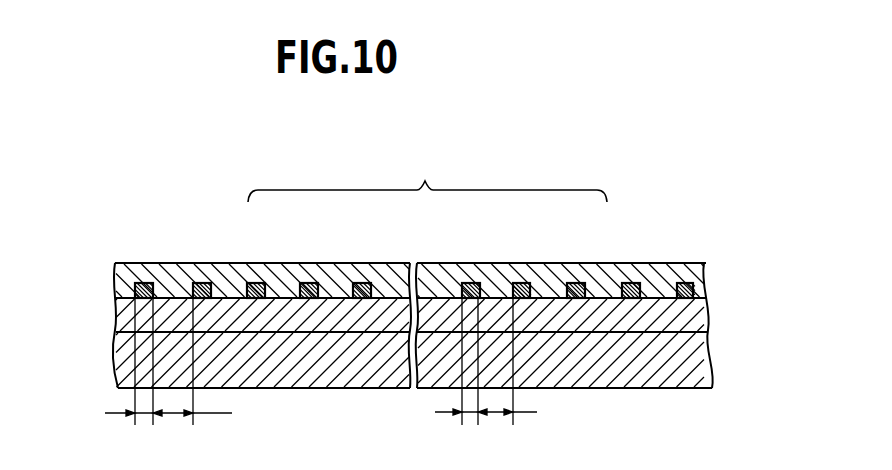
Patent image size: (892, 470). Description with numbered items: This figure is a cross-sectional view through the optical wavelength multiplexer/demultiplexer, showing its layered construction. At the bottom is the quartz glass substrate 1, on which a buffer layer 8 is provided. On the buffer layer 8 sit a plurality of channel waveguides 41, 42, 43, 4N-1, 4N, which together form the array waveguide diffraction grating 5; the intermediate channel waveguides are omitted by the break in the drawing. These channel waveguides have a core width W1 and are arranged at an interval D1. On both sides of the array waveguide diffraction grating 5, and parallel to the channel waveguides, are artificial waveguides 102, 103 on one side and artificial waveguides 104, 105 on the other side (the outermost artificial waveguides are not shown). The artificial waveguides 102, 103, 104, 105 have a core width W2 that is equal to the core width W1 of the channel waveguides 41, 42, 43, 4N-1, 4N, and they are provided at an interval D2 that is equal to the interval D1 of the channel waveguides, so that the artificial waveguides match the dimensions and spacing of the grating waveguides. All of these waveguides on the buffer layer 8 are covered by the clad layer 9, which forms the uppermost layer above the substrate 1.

The quartz glass substrate 1 is at (716, 363).
The buffer layer 8 is at (712, 318).
The clad layer 9 is at (705, 284).
The artificial waveguide 102 is at (142, 283).
The artificial waveguide 103 is at (200, 283).
The artificial waveguide 104 is at (637, 283).
The artificial waveguide 105 is at (690, 283).
The channel waveguide 41 is at (257, 283).
The channel waveguide 42 is at (313, 283).
The channel waveguide 43 is at (367, 283).
The channel waveguide 4N-1 is at (522, 283).
The channel waveguide 4N is at (578, 283).
The array waveguide diffraction grating 5 is at (427, 173).
The core width of the channel waveguides W1 is at (468, 415).
The interval of the channel waveguides D1 is at (495, 415).
The core width of the artificial waveguides W2 is at (145, 415).
The interval of the artificial waveguides D2 is at (177, 417).